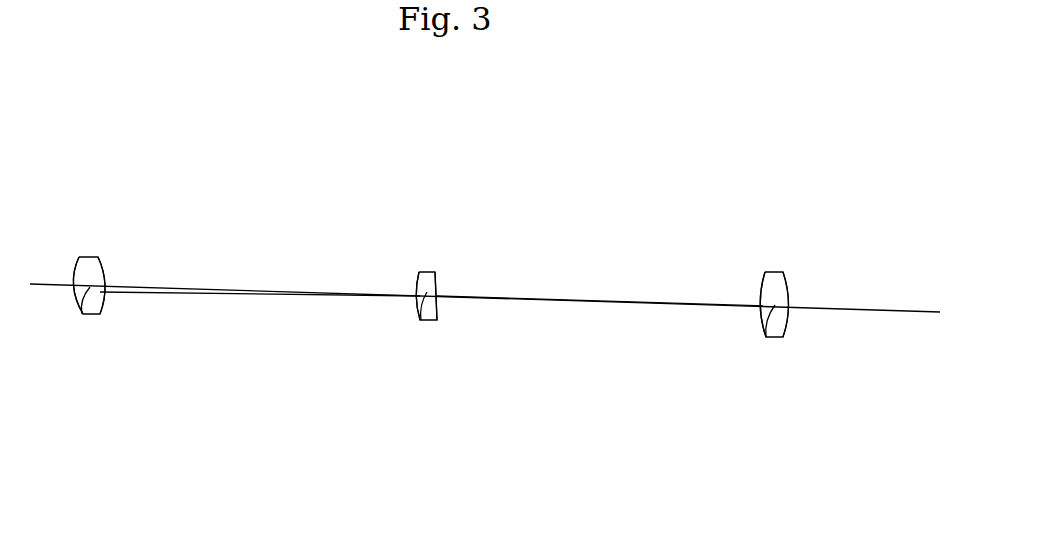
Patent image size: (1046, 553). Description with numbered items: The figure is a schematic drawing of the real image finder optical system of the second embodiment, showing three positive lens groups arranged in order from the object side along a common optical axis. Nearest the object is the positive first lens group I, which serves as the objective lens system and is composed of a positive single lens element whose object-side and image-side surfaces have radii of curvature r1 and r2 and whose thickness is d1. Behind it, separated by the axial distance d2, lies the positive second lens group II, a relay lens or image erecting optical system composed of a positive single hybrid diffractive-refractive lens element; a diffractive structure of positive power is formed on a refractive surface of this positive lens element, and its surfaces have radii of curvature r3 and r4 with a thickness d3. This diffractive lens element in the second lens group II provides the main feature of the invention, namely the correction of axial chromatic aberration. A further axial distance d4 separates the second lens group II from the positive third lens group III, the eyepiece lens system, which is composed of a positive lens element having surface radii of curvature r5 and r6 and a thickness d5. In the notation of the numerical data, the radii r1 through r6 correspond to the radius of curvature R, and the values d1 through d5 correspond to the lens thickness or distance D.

The first lens group I is at (138, 142).
The second lens group II is at (483, 152).
The third lens group III is at (822, 160).
The radius of curvature of first lens surface r1 is at (79, 257).
The radius of curvature of second lens surface r2 is at (99, 257).
The radius of curvature of third lens surface r3 is at (419, 272).
The radius of curvature of fourth lens surface r4 is at (436, 272).
The radius of curvature of fifth lens surface r5 is at (765, 272).
The radius of curvature of sixth lens surface r6 is at (783, 272).
The thickness of first lens element d1 is at (82, 314).
The distance between first and second lens groups d2 is at (265, 292).
The thickness of second lens element d3 is at (421, 320).
The distance between second and third lens groups d4 is at (602, 300).
The thickness of third lens element d5 is at (766, 337).